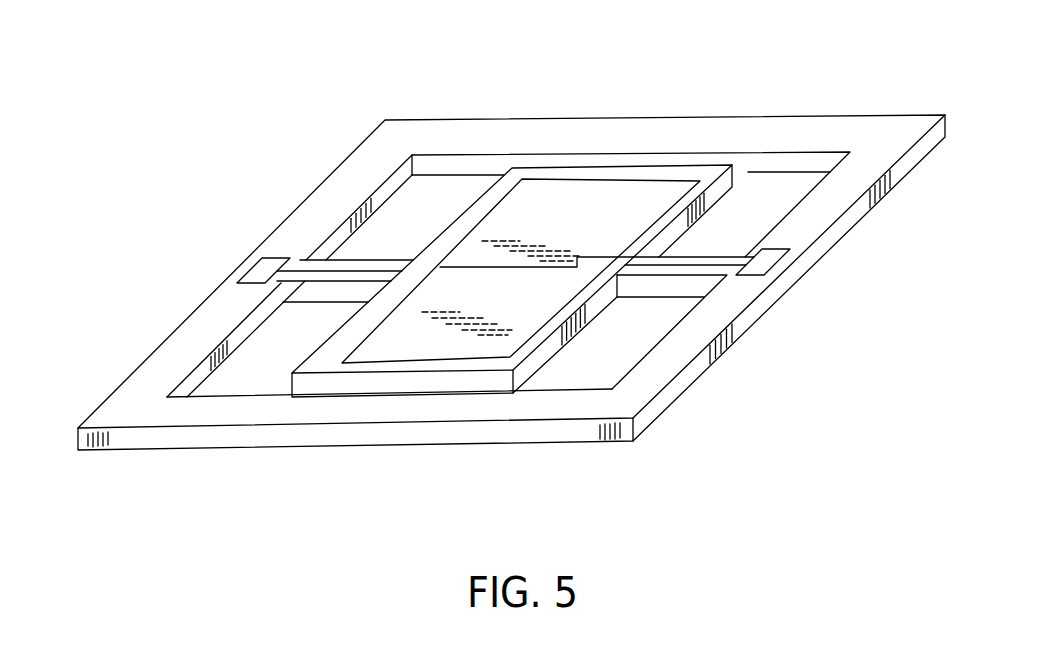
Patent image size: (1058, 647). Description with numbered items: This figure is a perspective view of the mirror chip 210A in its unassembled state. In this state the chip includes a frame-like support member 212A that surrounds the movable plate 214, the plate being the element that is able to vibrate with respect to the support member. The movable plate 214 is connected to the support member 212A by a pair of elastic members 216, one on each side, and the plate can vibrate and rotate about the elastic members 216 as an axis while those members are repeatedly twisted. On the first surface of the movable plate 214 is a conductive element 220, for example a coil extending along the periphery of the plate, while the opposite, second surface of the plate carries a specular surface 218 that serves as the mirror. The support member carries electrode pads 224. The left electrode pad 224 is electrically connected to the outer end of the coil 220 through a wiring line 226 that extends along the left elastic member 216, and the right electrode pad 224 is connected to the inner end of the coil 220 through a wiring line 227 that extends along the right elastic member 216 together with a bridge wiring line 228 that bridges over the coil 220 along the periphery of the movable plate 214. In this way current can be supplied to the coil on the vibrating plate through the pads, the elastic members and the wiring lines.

The mirror chip 210A is at (356, 96).
The frame-like support member 212A is at (838, 216).
The movable plate 214 is at (531, 356).
The elastic members 216 is at (328, 280).
The specular surface 218 is at (553, 357).
The conductive element 220 is at (570, 178).
The electrode pads 224 is at (254, 270).
The wiring line 226 is at (362, 268).
The wiring line 227 is at (668, 268).
The bridge wiring line 228 is at (589, 254).